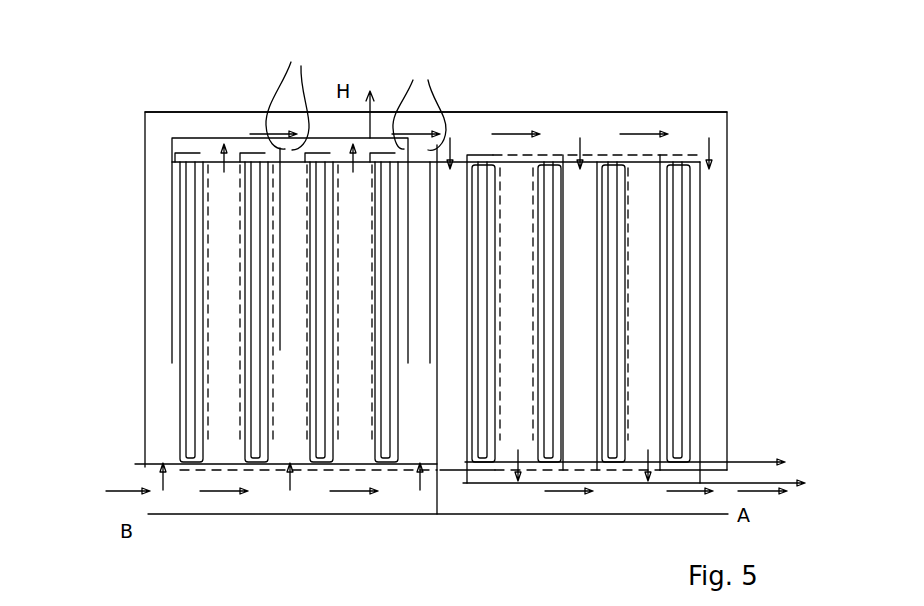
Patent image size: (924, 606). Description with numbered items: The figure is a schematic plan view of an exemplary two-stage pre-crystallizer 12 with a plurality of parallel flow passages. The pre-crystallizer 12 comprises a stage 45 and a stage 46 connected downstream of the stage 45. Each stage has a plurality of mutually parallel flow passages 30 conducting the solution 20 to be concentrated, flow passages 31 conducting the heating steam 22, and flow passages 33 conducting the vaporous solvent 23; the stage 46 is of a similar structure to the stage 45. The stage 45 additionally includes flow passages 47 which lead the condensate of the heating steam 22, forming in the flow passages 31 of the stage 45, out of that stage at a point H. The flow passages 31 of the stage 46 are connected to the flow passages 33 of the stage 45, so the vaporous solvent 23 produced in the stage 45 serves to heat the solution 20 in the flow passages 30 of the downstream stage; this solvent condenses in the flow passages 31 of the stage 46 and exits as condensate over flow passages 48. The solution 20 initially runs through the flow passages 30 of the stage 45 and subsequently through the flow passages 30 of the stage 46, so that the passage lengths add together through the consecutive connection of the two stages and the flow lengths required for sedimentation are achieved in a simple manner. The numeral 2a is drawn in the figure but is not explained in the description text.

The pre-crystallizer 12 is at (120, 66).
The solution to be concentrated 20 is at (135, 462).
The heating steam 22 is at (118, 498).
The vaporous solvent 23 is at (212, 158).
The partition wall 2a is at (455, 155).
The flow passages conducting the solution 30 is at (370, 253).
The flow passages conducting the heating steam 31 is at (420, 290).
The flow passages conducting the vaporous solvent 33 is at (353, 323).
The stage 45 is at (243, 112).
The stage 46 is at (548, 112).
The flow passages 47 is at (125, 134).
The flow passages 48 is at (616, 485).